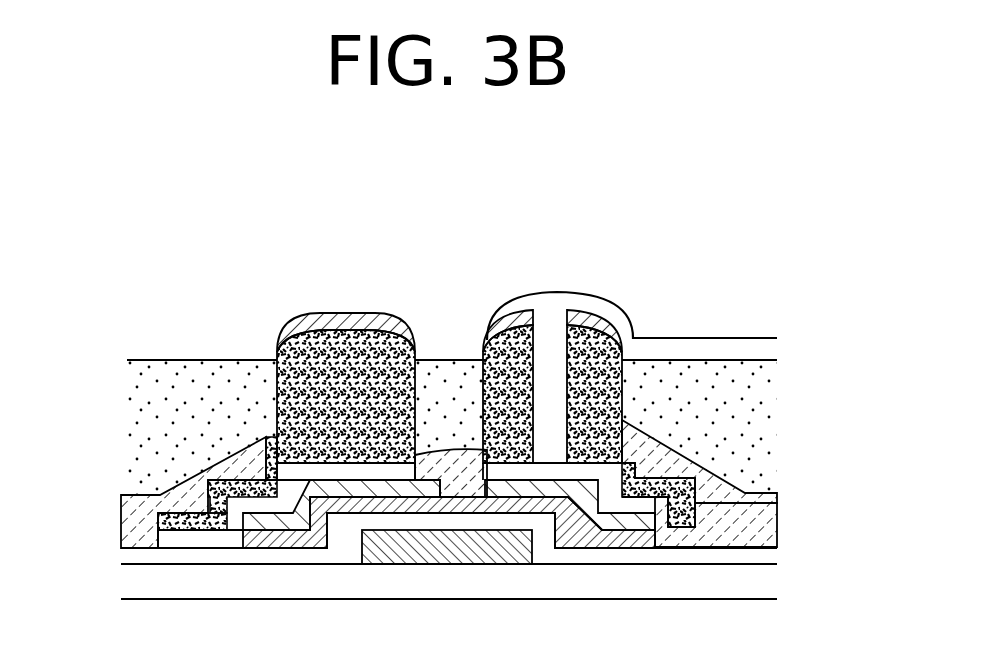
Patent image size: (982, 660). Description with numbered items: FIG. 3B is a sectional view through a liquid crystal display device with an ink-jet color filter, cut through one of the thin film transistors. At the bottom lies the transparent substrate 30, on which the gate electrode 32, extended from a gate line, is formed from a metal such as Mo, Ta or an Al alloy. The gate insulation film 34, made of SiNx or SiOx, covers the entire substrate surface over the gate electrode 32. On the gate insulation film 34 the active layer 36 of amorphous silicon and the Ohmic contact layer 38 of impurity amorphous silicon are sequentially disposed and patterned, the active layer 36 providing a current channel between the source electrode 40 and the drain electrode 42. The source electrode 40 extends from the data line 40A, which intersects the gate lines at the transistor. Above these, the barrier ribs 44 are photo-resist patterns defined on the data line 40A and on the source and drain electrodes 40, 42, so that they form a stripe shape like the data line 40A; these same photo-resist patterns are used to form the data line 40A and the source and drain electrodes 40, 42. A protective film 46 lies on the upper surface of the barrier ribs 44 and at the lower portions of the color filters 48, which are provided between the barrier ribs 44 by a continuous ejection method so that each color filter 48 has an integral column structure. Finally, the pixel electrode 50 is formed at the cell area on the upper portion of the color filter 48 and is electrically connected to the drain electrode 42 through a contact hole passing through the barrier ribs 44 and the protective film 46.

The transparent substrate 30 is at (362, 600).
The gate electrode 32 is at (487, 565).
The gate insulation film 34 is at (292, 562).
The active layer 36 is at (606, 545).
The Ohmic contact layer 38 is at (232, 510).
The source electrode 40 is at (268, 438).
The data line 40A is at (157, 527).
The drain electrode 42 is at (752, 505).
The barrier ribs 44 is at (622, 420).
The protective film 46 is at (488, 330).
The color filter 48 is at (757, 387).
The pixel electrode 50 is at (540, 295).